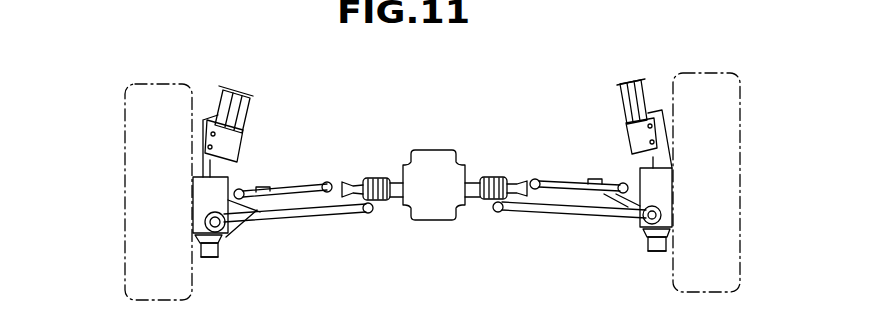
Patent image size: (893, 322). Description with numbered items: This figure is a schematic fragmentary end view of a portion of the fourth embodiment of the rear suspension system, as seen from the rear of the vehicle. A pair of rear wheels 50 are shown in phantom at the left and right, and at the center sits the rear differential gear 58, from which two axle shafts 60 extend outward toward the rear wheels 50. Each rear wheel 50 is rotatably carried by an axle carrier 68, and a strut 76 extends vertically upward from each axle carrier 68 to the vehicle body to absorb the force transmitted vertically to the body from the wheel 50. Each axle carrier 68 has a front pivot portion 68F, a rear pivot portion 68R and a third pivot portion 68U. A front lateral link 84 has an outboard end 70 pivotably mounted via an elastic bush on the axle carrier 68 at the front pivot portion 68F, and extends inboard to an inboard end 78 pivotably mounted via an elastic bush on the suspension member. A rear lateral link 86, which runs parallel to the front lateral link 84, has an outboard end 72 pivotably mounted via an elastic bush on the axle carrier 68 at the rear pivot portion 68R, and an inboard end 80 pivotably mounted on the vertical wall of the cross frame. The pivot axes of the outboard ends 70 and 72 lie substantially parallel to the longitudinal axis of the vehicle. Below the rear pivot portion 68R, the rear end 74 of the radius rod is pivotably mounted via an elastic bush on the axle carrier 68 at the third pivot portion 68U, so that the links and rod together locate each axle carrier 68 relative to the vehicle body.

The rear wheel 50 is at (125, 145).
The rear differential gear 58 is at (433, 152).
The axle shaft 60 is at (352, 185).
The axle carrier 68 is at (198, 190).
The front pivot portion 68F is at (230, 187).
The rear pivot portion 68R is at (205, 222).
The third pivot portion 68U is at (203, 238).
The outboard end of front lateral link 70 is at (241, 189).
The outboard end of rear lateral link 72 is at (226, 238).
The rear end of radius rod 74 is at (210, 258).
The strut 76 is at (232, 112).
The inboard end of front lateral link 78 is at (327, 182).
The inboard end of rear lateral link 80 is at (366, 214).
The front lateral link 84 is at (303, 189).
The rear lateral link 86 is at (297, 225).